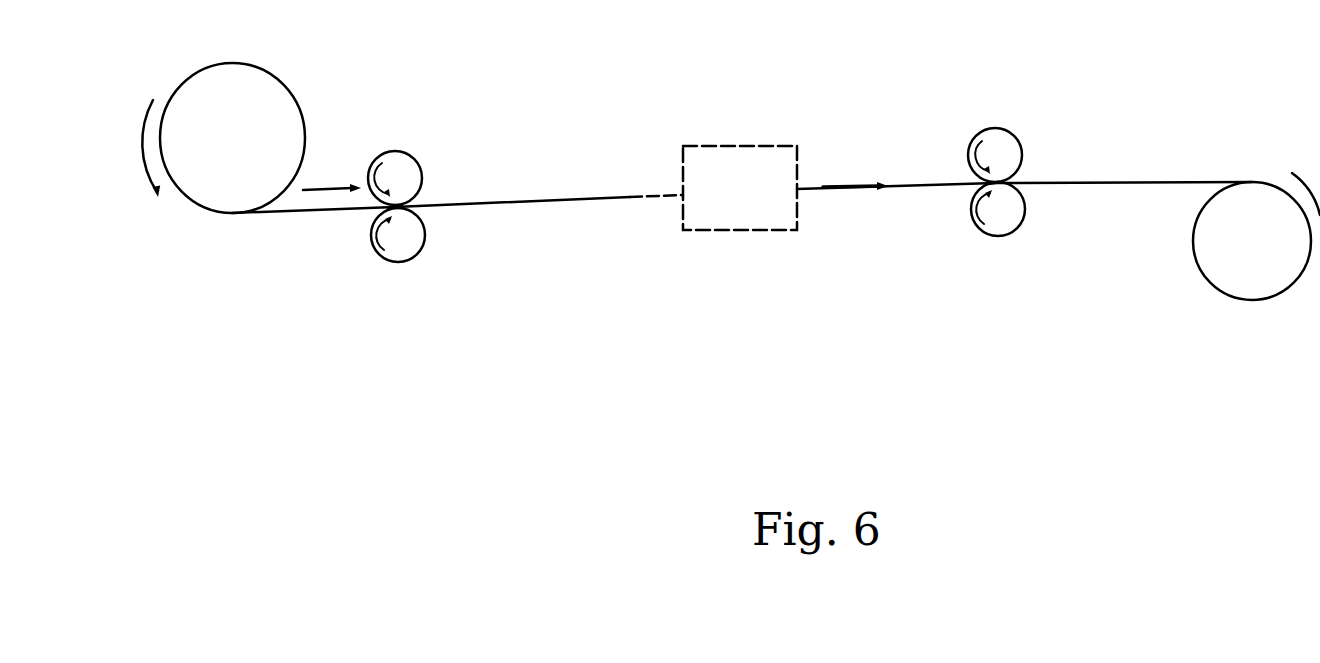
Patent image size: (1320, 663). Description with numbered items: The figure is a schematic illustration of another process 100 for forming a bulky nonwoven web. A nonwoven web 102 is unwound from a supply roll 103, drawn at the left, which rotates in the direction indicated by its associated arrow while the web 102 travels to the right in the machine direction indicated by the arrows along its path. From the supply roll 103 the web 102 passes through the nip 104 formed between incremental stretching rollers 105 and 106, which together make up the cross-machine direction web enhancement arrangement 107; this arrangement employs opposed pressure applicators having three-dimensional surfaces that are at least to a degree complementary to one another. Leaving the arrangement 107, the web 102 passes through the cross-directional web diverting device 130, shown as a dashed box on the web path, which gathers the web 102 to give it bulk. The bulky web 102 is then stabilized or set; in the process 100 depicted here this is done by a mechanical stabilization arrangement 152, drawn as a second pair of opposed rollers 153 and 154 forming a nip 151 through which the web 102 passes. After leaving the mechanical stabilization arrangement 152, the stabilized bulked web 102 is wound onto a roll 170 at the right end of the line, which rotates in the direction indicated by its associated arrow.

The process 100 is at (718, 192).
The nonwoven web 102 is at (283, 215).
The supply roll 103 is at (277, 83).
The nip 104 is at (366, 215).
The incremental stretching roller 105 is at (397, 151).
The incremental stretching roller 106 is at (400, 262).
The cross-machine direction web enhancement arrangement 107 is at (355, 204).
The cross-directional web diverting device 130 is at (740, 155).
The nip 151 is at (966, 190).
The mechanical stabilization arrangement 152 is at (1015, 181).
The upper nip roller 153 is at (995, 128).
The lower nip roller 154 is at (1002, 236).
The take-up roll 170 is at (1247, 302).